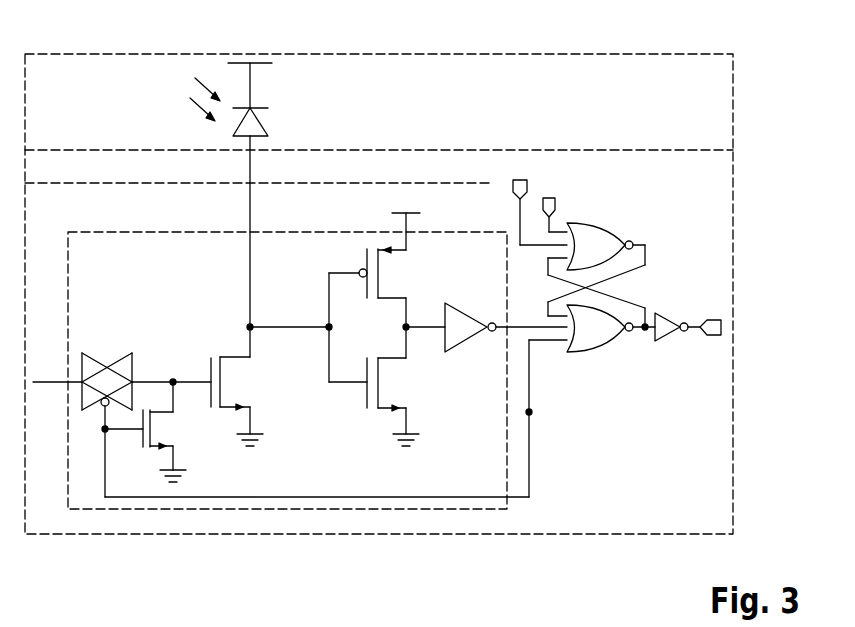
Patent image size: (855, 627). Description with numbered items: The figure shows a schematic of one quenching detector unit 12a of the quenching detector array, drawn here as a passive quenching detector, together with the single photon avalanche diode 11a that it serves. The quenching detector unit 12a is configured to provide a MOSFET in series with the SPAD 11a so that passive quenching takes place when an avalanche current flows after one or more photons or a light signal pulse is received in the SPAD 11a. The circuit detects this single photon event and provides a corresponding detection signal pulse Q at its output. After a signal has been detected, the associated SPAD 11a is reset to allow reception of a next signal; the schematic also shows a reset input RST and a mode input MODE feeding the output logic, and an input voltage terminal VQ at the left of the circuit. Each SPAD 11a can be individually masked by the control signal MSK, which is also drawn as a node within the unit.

The single photon avalanche diode 11a is at (288, 118).
The quenching detector unit 12a is at (411, 268).
The input voltage terminal VQ is at (57, 368).
The mode input MODE is at (541, 199).
The reset input RST is at (570, 211).
The control signal MSK is at (533, 412).
The detection signal pulse Q is at (705, 315).